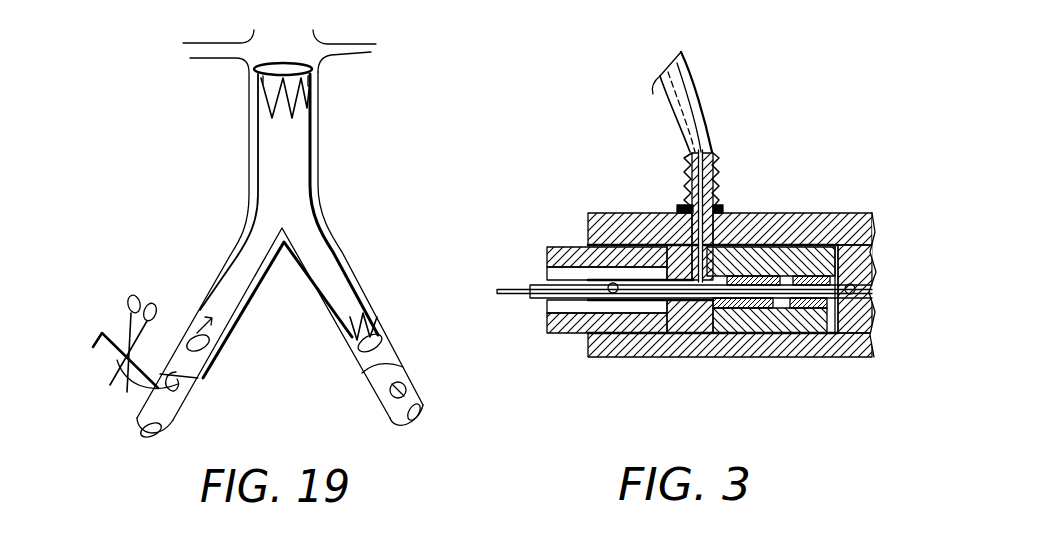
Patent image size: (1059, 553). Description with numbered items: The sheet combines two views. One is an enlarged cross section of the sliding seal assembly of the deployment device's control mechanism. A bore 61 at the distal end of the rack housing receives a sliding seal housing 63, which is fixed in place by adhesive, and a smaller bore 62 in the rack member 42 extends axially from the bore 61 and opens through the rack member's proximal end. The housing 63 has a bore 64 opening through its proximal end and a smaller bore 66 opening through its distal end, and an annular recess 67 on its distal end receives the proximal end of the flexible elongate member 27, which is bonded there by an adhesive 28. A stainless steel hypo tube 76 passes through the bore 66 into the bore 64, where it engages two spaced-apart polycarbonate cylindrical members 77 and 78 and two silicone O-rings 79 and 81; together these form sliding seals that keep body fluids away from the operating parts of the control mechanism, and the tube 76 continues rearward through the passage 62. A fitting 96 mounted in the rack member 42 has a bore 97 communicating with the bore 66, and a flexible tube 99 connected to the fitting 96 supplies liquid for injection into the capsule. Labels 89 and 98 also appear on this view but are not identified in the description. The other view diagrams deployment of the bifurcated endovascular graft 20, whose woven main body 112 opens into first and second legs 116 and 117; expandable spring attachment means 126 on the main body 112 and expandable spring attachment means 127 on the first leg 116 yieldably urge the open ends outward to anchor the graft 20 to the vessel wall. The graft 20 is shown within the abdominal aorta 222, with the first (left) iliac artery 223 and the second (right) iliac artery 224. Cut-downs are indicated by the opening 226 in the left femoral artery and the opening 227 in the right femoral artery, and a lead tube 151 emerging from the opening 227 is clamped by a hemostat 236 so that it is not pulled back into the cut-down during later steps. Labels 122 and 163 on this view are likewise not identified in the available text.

In FIG. 19, the endovascular graft 20 is at (313, 241).
In FIG. 19, the main deformable cylindrical body 112 is at (293, 202).
In FIG. 19, the first leg 116 is at (327, 253).
In FIG. 19, the second leg 117 is at (246, 253).
In FIG. 19, the graft crotch 122 is at (286, 247).
In FIG. 19, the expandable spring attachment means 126 is at (312, 93).
In FIG. 19, the expandable spring attachment means 127 is at (385, 329).
In FIG. 19, the lead tube 151 is at (145, 388).
In FIG. 19, the capsule ring 163 is at (218, 339).
In FIG. 19, the abdominal aorta 222 is at (317, 133).
In FIG. 19, the left iliac artery 223 is at (371, 289).
In FIG. 19, the right iliac artery 224 is at (211, 277).
In FIG. 19, the opening 226 is at (390, 407).
In FIG. 19, the opening 227 is at (170, 419).
In FIG. 19, the hemostat 236 is at (126, 317).
In FIG. 3, the flexible elongate member 27 is at (553, 330).
In FIG. 3, the adhesive 28 is at (547, 264).
In FIG. 3, the rack member 42 is at (586, 347).
In FIG. 3, the bore 61 is at (706, 238).
In FIG. 3, the smaller bore 62 is at (867, 214).
In FIG. 3, the sliding seal housing 63 is at (770, 262).
In FIG. 3, the bore 64 is at (752, 335).
In FIG. 3, the smaller bore 66 is at (632, 268).
In FIG. 3, the annular recess 67 is at (618, 348).
In FIG. 3, the metal hypo tube 76 is at (533, 298).
In FIG. 3, the cylindrical member 77 is at (718, 343).
In FIG. 3, the cylindrical member 78 is at (820, 350).
In FIG. 3, the O-ring 79 is at (680, 345).
In FIG. 3, the O-ring 81 is at (788, 336).
In FIG. 3, the inner catheter tube 89 is at (513, 282).
In FIG. 3, the fitting 96 is at (717, 205).
In FIG. 3, the bore 97 is at (712, 233).
In FIG. 3, the fitting 98 is at (683, 277).
In FIG. 3, the flexible tube 99 is at (688, 106).